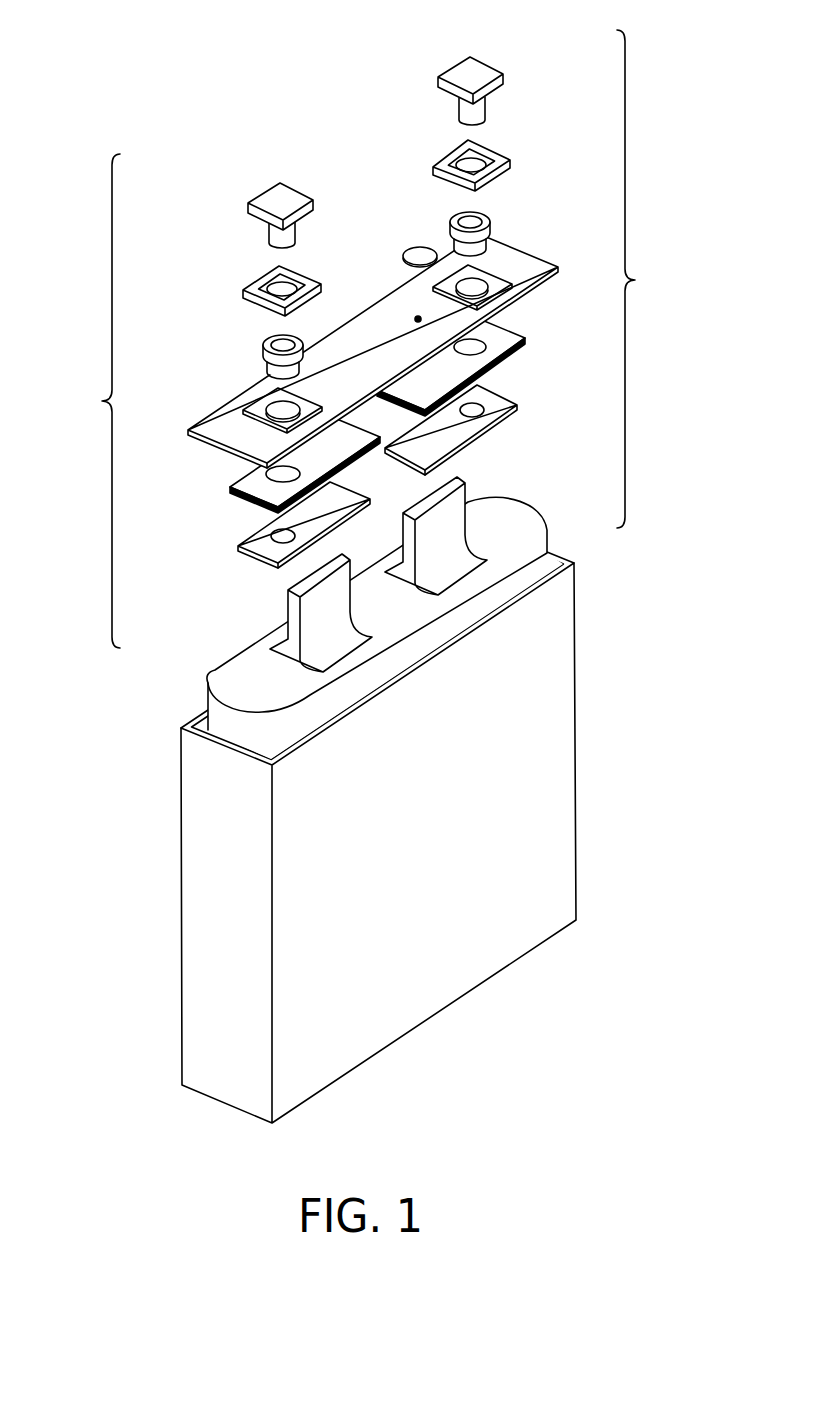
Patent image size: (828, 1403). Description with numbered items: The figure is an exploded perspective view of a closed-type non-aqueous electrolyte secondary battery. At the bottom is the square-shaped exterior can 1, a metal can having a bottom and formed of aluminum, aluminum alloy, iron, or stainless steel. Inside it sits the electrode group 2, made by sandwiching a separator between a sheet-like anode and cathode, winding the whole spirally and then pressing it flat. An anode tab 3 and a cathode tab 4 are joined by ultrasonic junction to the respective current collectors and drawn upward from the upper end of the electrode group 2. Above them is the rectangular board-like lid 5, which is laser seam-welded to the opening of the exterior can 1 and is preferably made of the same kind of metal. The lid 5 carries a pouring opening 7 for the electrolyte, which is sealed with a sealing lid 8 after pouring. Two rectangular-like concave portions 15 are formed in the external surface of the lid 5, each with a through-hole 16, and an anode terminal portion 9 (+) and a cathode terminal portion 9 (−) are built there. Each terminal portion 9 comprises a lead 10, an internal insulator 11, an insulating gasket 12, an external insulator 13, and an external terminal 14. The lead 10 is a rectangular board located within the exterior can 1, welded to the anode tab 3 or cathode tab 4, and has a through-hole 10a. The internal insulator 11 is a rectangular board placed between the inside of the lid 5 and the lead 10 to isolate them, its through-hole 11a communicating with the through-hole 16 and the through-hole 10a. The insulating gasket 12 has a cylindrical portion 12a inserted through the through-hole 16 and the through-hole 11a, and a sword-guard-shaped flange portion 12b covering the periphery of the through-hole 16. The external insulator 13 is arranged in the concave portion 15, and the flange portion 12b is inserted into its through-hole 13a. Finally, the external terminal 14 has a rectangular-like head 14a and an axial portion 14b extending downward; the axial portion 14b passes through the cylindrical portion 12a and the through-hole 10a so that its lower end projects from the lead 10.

The exterior can 1 is at (569, 713).
The electrode group 2 is at (208, 690).
The anode tab 3 is at (287, 613).
The cathode tab 4 is at (468, 487).
The lid 5 is at (357, 348).
The pouring opening 7 is at (417, 318).
The sealing lid 8 is at (420, 248).
The terminal portion 9 is at (366, 339).
The lead 10 is at (392, 489).
The through-hole 10a is at (282, 543).
The internal insulator 11 is at (383, 415).
The through-hole 11a is at (268, 475).
The insulating gasket 12 is at (410, 276).
The cylindrical portion 12a is at (300, 364).
The flange portion 12b is at (292, 338).
The external insulator 13 is at (381, 219).
The through-hole 13a is at (258, 287).
The external terminal 14 is at (382, 127).
The head 14a is at (268, 195).
The axial portion 14b is at (270, 230).
The concave portion 15 is at (379, 331).
The through-hole 16 is at (280, 404).